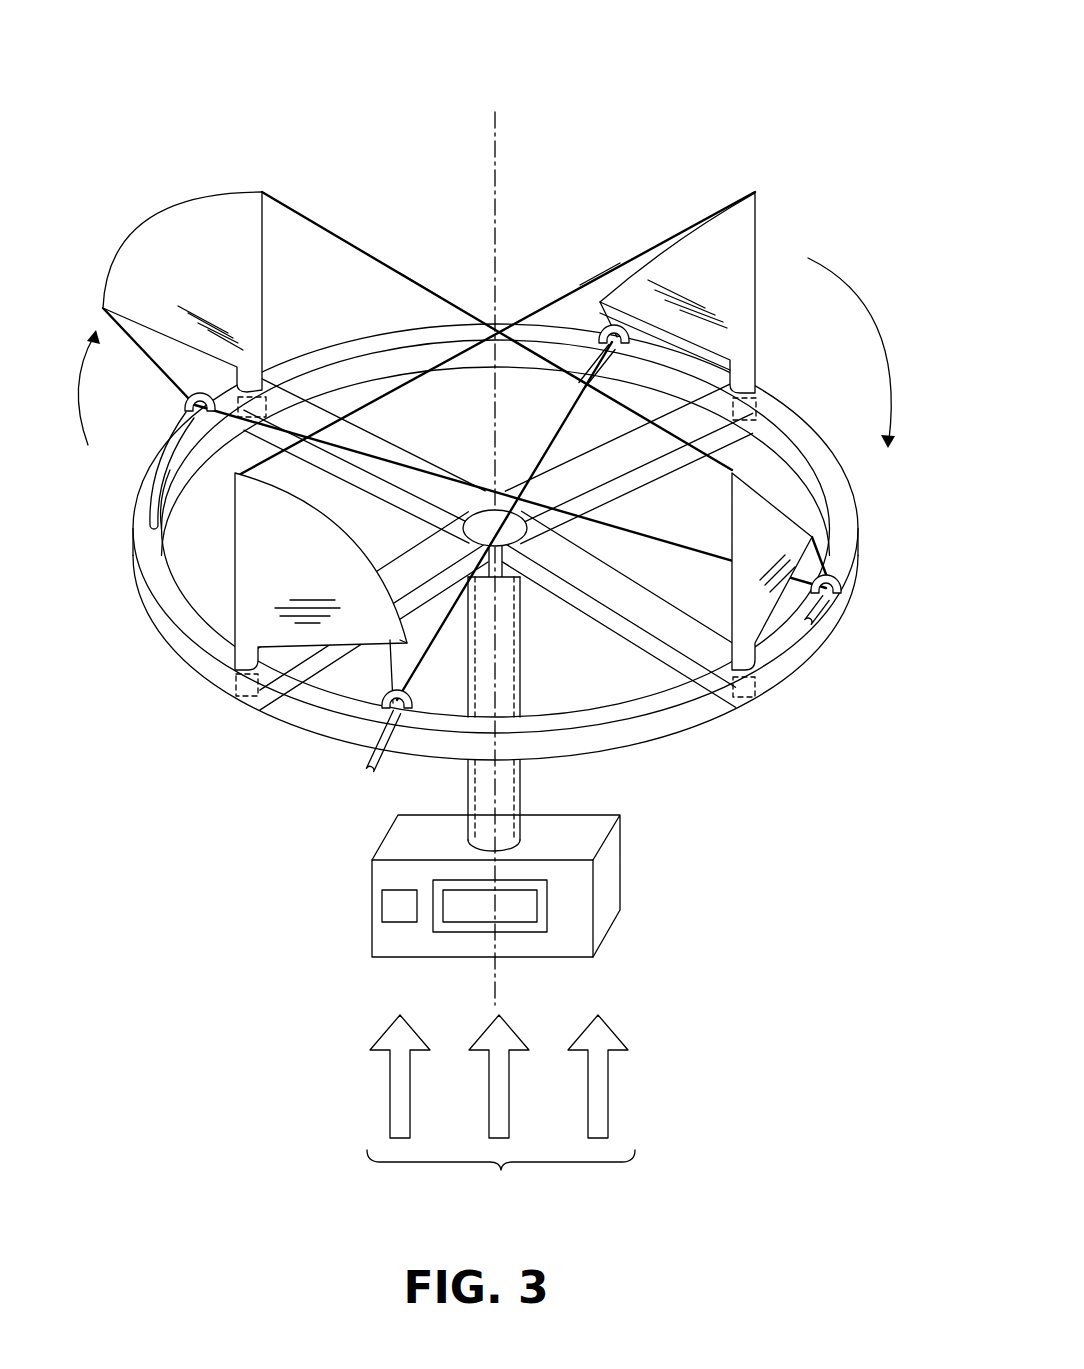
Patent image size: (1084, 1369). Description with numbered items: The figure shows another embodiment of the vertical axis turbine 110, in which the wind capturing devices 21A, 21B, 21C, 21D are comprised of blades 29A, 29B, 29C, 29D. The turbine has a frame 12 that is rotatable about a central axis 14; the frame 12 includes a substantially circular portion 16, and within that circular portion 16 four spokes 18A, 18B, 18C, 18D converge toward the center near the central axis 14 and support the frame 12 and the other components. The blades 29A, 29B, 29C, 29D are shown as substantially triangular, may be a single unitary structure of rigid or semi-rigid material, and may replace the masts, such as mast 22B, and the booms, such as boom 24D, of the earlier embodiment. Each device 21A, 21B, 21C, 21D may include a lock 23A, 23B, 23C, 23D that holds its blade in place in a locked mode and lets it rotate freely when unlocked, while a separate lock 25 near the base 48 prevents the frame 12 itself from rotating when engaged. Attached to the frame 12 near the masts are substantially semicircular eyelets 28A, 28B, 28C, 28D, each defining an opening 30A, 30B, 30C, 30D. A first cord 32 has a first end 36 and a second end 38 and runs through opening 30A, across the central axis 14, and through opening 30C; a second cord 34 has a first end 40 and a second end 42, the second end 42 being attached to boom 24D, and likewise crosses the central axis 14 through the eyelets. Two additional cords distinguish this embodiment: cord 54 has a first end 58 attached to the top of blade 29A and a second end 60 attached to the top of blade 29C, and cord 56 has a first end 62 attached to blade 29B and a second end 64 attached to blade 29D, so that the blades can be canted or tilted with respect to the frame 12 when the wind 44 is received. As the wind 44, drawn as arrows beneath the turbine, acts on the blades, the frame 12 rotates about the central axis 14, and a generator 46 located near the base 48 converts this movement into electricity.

The vertical axis turbine 110 is at (755, 91).
The frame 12 is at (525, 542).
The central axis 14 is at (492, 165).
The substantially circular portion 16 is at (525, 542).
The spoke 18A is at (330, 405).
The spoke 18B is at (640, 478).
The spoke 18C is at (665, 645).
The spoke 18D is at (410, 575).
The wind capturing device 21A is at (212, 233).
The wind capturing device 21B is at (730, 277).
The wind capturing device 21C is at (793, 520).
The wind capturing device 21D is at (227, 588).
The mast 22B is at (662, 275).
The lock 23A is at (256, 405).
The lock 23B is at (758, 410).
The lock 23C is at (757, 690).
The lock 23D is at (240, 690).
The boom 24D is at (395, 640).
The lock 25 is at (497, 886).
The eyelet 28A is at (182, 420).
The eyelet 28B is at (590, 333).
The eyelet 28C is at (835, 592).
The eyelet 28D is at (385, 712).
The blade 29A is at (228, 265).
The blade 29B is at (730, 277).
The blade 29C is at (780, 571).
The blade 29D is at (227, 588).
The opening 30A is at (185, 410).
The opening 30B is at (588, 388).
The opening 30C is at (815, 622).
The opening 30D is at (378, 750).
The first cord 32 is at (160, 490).
The second cord 34 is at (416, 549).
The first end 36 is at (170, 380).
The second end 38 is at (813, 553).
The first end 40 is at (600, 313).
The second end 42 is at (548, 432).
The wind 44 is at (501, 1105).
The generator 46 is at (382, 910).
The base 48 is at (515, 797).
The cord 54 is at (428, 288).
The cord 56 is at (597, 277).
The first end 58 is at (273, 197).
The second end 60 is at (833, 473).
The first end 62 is at (700, 215).
The second end 64 is at (270, 540).